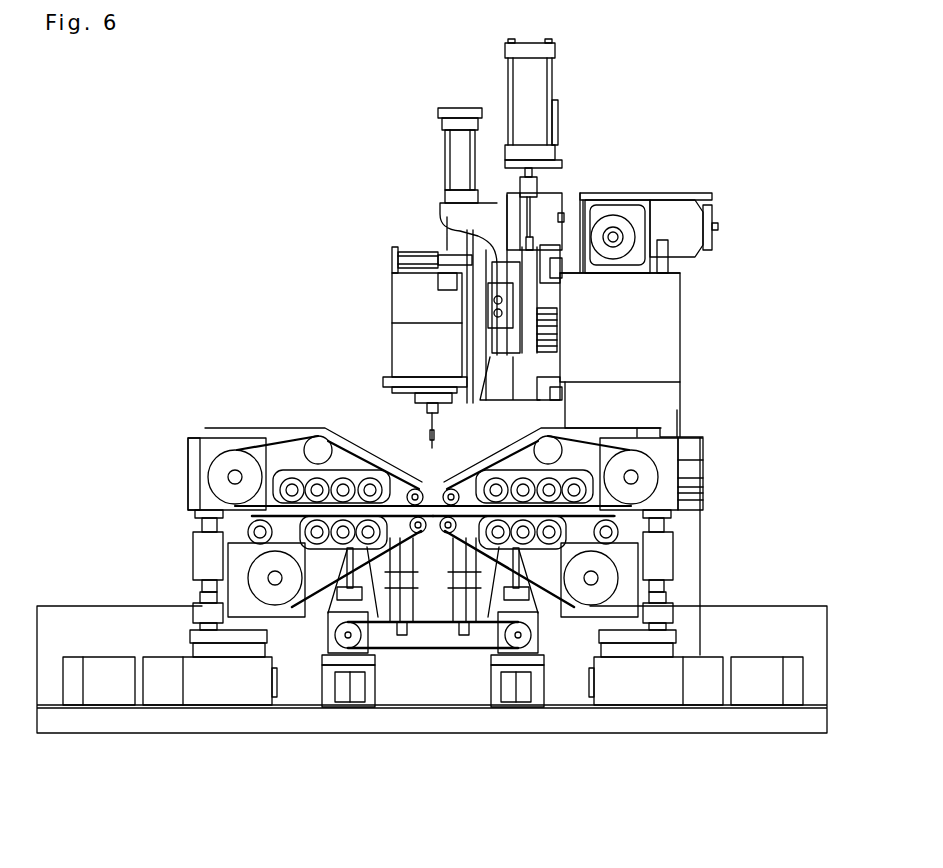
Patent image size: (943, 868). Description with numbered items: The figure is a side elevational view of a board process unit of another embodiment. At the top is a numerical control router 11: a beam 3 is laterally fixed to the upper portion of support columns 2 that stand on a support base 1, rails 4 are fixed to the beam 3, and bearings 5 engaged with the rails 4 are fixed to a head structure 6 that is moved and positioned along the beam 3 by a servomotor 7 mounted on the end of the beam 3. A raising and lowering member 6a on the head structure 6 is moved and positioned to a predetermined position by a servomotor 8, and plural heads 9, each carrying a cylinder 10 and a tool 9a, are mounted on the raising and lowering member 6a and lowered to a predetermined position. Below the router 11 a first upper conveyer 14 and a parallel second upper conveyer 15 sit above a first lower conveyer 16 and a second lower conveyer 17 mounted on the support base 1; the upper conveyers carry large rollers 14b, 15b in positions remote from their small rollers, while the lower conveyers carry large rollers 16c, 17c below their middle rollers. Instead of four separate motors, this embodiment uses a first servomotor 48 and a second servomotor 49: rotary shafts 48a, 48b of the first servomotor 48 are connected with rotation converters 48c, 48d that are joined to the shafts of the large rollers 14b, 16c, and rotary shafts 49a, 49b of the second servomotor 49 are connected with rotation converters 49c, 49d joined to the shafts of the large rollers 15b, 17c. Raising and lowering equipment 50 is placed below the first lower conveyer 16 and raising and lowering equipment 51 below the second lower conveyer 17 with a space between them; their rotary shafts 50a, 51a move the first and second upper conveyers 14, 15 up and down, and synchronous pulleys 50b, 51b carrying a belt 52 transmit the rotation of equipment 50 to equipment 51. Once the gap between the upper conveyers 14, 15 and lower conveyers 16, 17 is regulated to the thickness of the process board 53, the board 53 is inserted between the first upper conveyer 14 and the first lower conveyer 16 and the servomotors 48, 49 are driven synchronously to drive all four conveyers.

The support base 1 is at (793, 725).
The support columns 2 is at (672, 405).
The beam 3 is at (670, 334).
The rails 4 is at (560, 272).
The bearings 5 is at (560, 265).
The head structure 6 is at (480, 313).
The raising and lowering member 6a is at (523, 332).
The servomotor 7 is at (678, 225).
The servomotor 8 is at (558, 117).
The plural heads 9 is at (400, 295).
The tools 9a is at (428, 433).
The cylinder 10 is at (455, 160).
The numerical control router 11 is at (415, 224).
The first upper conveyer 14 is at (290, 455).
The large roller 14b is at (220, 477).
The second upper conveyer 15 is at (645, 462).
The large roller 15b is at (665, 478).
The first lower conveyer 16 is at (253, 547).
The large roller 16c is at (260, 573).
The second lower conveyer 17 is at (655, 542).
The large roller 17c is at (670, 567).
The first servomotor 48 is at (98, 697).
The rotary shaft 48a is at (202, 593).
The rotary shaft 48b is at (248, 622).
The rotation converter 48c is at (193, 452).
The rotation converter 48d is at (238, 603).
The second servomotor 49 is at (760, 697).
The rotary shaft 49a is at (678, 581).
The rotary shaft 49b is at (613, 618).
The rotation converter 49c is at (660, 497).
The rotation converter 49d is at (623, 603).
The raising and lowering equipment 50 is at (340, 670).
The rotary shaft 50a is at (330, 605).
The synchronous pulley 50b is at (358, 667).
The raising and lowering equipment 51 is at (527, 665).
The rotary shaft 51a is at (535, 612).
The synchronous pulley 51b is at (505, 667).
The belt 52 is at (430, 652).
The process board 53 is at (430, 498).